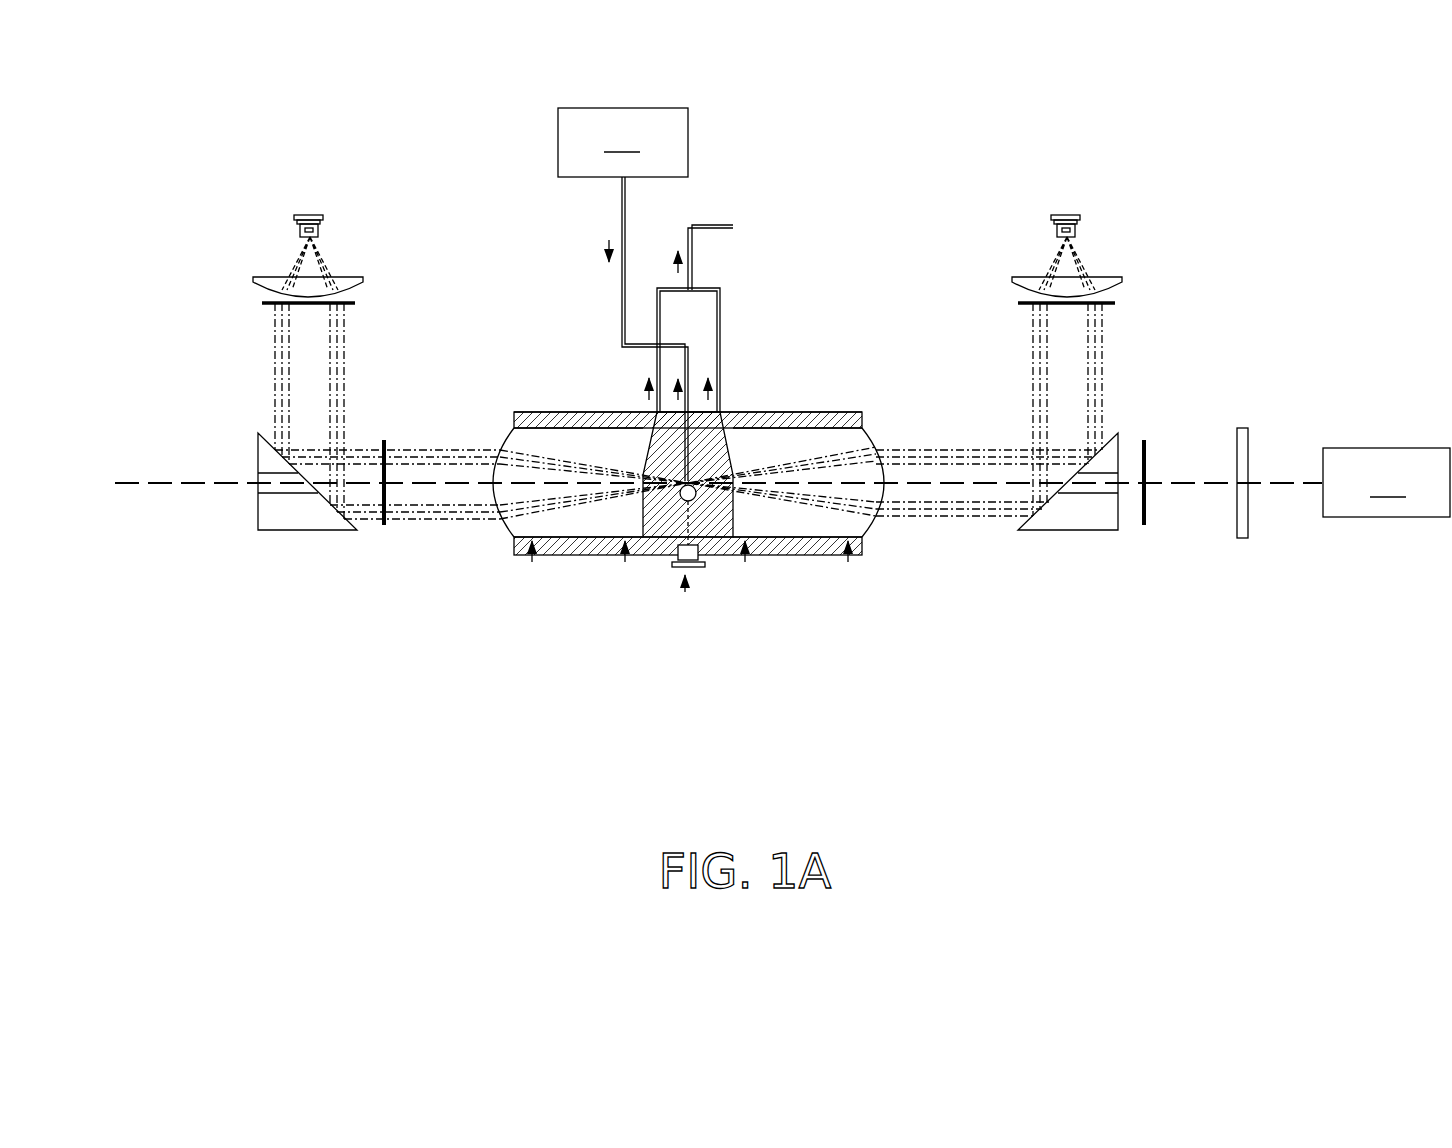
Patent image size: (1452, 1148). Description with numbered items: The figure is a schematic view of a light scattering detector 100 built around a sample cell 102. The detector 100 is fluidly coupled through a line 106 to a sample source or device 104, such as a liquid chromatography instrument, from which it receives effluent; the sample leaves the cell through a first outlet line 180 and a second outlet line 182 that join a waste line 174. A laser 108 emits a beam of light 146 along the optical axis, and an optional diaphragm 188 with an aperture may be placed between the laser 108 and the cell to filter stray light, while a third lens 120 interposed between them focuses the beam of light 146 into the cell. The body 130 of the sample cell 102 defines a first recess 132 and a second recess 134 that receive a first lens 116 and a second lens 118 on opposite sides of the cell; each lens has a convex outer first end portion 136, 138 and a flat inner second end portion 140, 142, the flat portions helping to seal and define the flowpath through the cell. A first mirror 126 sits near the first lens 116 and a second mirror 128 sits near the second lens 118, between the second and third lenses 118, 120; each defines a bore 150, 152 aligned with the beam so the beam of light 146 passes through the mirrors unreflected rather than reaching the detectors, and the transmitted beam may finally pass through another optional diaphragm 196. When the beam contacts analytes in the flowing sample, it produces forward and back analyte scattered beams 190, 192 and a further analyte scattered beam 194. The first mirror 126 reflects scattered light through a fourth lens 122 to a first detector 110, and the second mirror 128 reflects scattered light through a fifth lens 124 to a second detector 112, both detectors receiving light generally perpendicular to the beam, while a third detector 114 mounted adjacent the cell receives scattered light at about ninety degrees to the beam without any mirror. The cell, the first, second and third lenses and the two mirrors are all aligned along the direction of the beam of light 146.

The light scattering detector 100 is at (237, 178).
The sample cell 102 is at (845, 408).
The sample source or device 104 is at (623, 142).
The line 106 is at (622, 208).
The laser 108 is at (1386, 482).
The first detector 110 is at (338, 224).
The second detector 112 is at (1081, 201).
The third detector 114 is at (685, 592).
The first lens 116 is at (583, 522).
The second lens 118 is at (777, 512).
The third lens 120 is at (1247, 540).
The fourth lens 122 is at (253, 278).
The fifth lens 124 is at (1122, 284).
The first mirror 126 is at (292, 515).
The second mirror 128 is at (1068, 512).
The body 130 is at (790, 417).
The first recess 132 is at (590, 433).
The second recess 134 is at (818, 527).
The first end portion of first lens 136 is at (532, 562).
The first end portion of second lens 138 is at (848, 562).
The second end portion of first lens 140 is at (625, 562).
The second end portion of second lens 142 is at (745, 562).
The beam of light 146 is at (1286, 478).
The bore 150 is at (290, 495).
The bore 152 is at (1101, 495).
The waste line 174 is at (703, 226).
The first outlet line 180 is at (657, 310).
The second outlet line 182 is at (720, 312).
The diaphragm 188 is at (1148, 438).
The forward analyte scattered beam 190 is at (434, 437).
The back analyte scattered beam 192 is at (957, 438).
The analyte scattered beam 194 is at (680, 533).
The optional diaphragm 196 is at (384, 437).